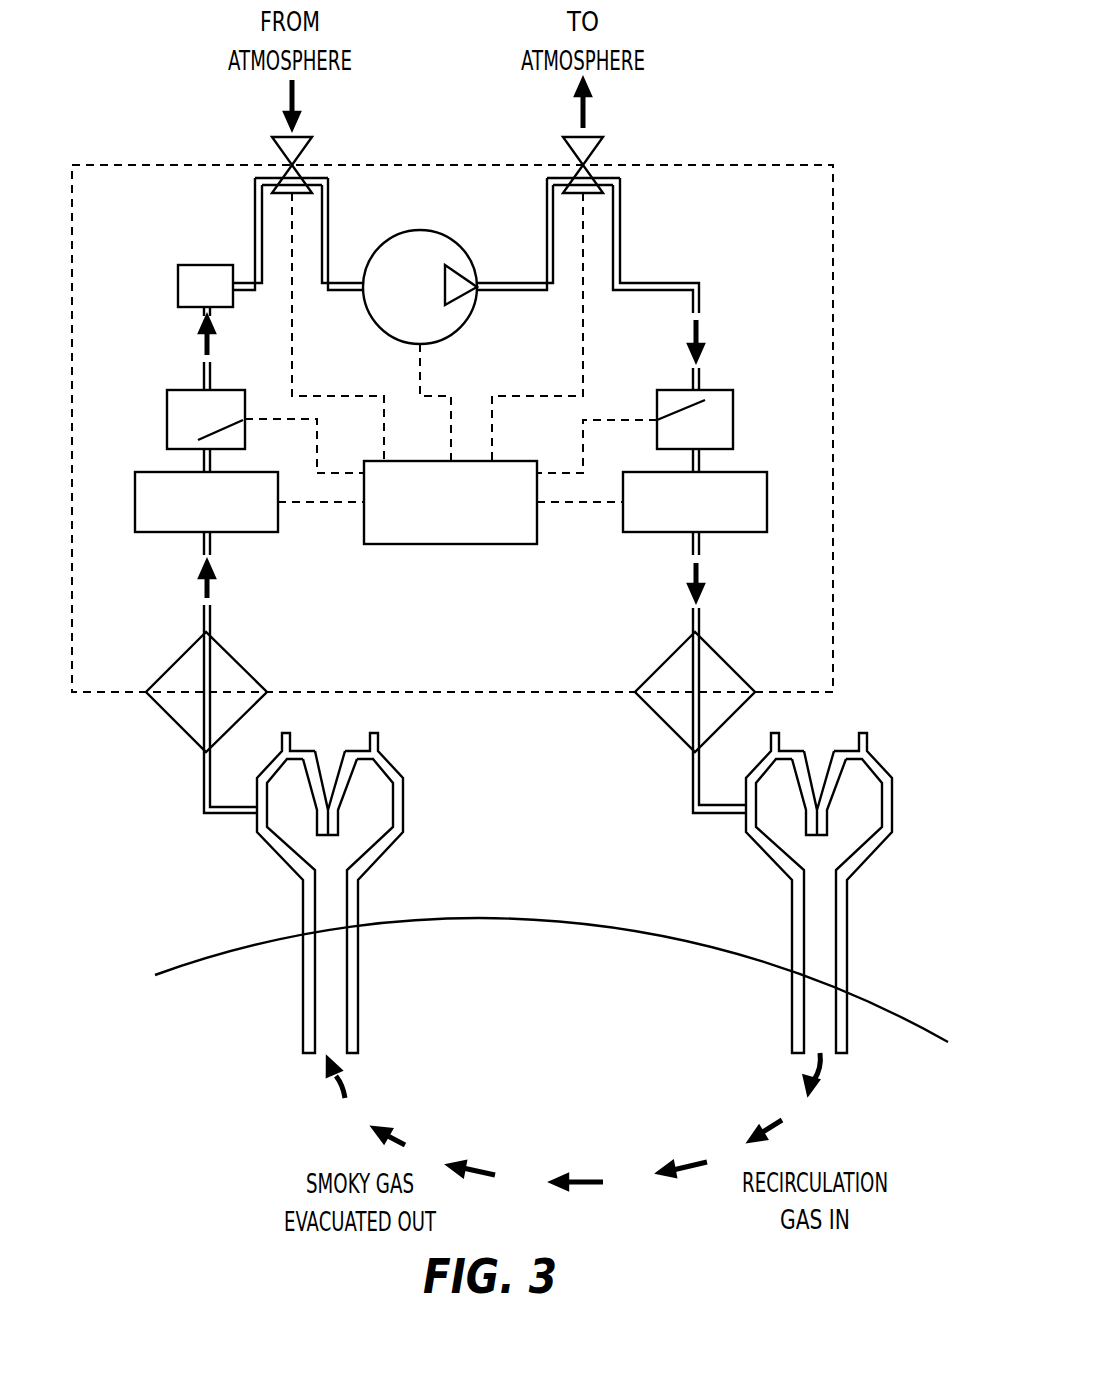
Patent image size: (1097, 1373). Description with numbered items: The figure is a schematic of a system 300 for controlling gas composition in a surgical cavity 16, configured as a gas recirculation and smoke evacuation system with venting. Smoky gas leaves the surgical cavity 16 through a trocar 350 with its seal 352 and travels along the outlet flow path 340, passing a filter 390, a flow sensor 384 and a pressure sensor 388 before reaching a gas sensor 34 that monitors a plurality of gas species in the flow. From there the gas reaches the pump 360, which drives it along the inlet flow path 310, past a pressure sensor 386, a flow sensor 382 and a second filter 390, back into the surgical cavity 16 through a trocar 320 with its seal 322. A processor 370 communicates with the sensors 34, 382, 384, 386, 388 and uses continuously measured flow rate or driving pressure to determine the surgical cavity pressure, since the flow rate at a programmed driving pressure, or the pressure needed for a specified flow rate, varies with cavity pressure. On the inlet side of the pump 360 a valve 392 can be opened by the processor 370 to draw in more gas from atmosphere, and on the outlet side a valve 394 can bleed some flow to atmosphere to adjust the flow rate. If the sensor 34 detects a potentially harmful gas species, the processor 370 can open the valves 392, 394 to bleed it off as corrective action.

The surgical cavity 16 is at (577, 962).
The sensor 34 is at (195, 290).
The system 300 is at (158, 140).
The inlet flow path 310 is at (645, 781).
The trocar 320 is at (847, 932).
The seal 322 is at (832, 818).
The outlet flow path 340 is at (180, 798).
The trocar 350 is at (367, 905).
The seal 352 is at (342, 812).
The pump 360 is at (462, 323).
The processor 370 is at (450, 502).
The flow sensor 382 is at (695, 537).
The flow sensor 384 is at (206, 535).
The pressure sensor 386 is at (733, 420).
The pressure sensor 388 is at (167, 419).
The filter 390 is at (233, 660).
The valve 392 is at (313, 143).
The valve 394 is at (603, 143).